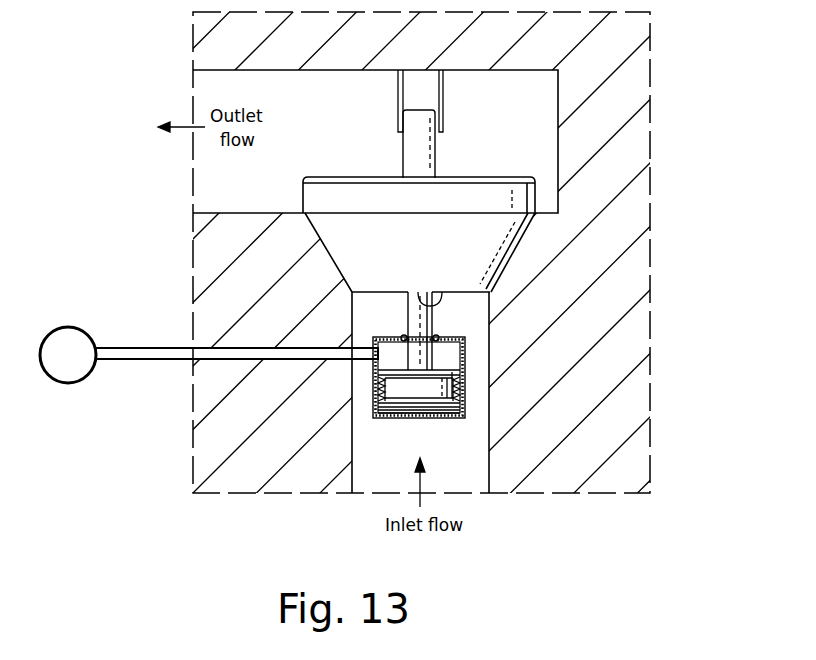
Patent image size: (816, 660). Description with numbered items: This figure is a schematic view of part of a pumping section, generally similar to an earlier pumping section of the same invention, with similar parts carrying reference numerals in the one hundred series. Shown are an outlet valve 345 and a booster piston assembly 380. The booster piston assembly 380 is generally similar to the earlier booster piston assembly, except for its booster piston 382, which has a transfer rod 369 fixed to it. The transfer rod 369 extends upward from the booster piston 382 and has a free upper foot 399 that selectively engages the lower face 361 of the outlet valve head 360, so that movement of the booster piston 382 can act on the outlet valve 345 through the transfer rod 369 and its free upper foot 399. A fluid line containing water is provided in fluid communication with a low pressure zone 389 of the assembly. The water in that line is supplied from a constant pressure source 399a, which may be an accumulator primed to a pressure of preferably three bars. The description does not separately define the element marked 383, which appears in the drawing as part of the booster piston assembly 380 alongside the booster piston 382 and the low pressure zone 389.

The outlet valve 345 is at (488, 180).
The outlet valve head 360 is at (528, 232).
The lower face 361 is at (373, 294).
The transfer rod 369 is at (438, 318).
The low pressure zone 389 is at (452, 353).
The threaded insert 383 is at (465, 387).
The booster piston 382 is at (410, 410).
The booster piston assembly 380 is at (467, 410).
The free upper foot 399 is at (436, 300).
The constant pressure source 399a is at (65, 327).